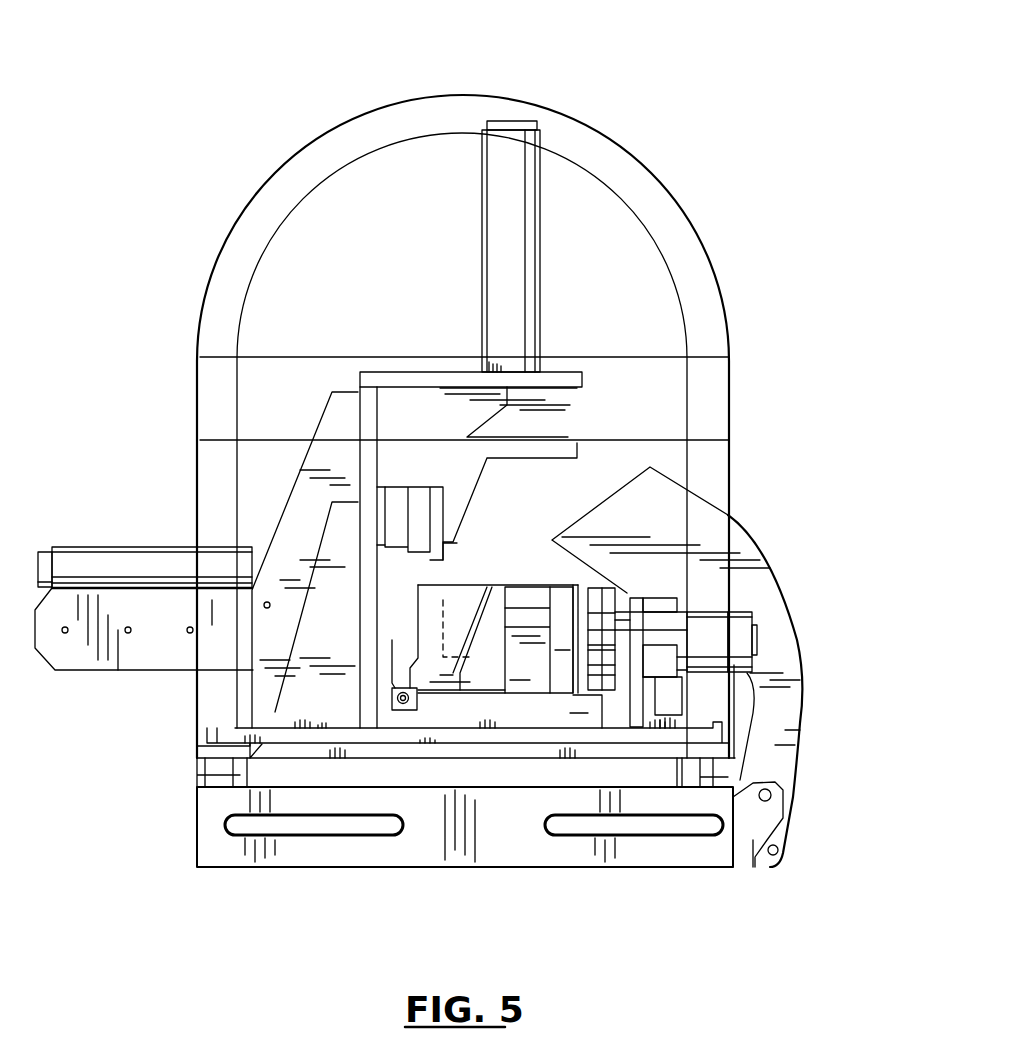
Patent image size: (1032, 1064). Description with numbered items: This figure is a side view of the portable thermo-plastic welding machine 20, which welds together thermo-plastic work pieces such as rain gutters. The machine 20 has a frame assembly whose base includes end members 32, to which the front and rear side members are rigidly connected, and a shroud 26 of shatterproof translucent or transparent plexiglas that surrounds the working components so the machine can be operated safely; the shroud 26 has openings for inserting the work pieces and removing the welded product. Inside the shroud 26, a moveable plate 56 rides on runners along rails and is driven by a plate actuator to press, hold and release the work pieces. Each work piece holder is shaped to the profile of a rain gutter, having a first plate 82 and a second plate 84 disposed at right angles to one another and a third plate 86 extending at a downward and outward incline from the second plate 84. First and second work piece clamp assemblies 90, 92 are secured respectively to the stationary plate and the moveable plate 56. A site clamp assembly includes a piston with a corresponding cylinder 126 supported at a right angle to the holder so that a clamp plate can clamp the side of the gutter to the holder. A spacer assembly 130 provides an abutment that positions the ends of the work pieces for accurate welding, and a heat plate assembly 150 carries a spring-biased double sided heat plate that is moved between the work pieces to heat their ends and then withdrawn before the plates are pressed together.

The portable thermo-plastic welding machine 20 is at (618, 122).
The shroud 26 is at (650, 253).
The end member 32 is at (502, 865).
The moveable plate 56 is at (337, 865).
The first plate of the work piece holder 82 is at (528, 620).
The second plate of the work piece holder 84 is at (513, 600).
The third plate of the work piece holder 86 is at (463, 593).
The first work piece clamp assembly 90 is at (513, 170).
The second work piece clamp assembly 92 is at (512, 246).
The cylinder 126 is at (758, 640).
The spacer assembly 130 is at (663, 523).
The heat plate assembly 150 is at (120, 562).